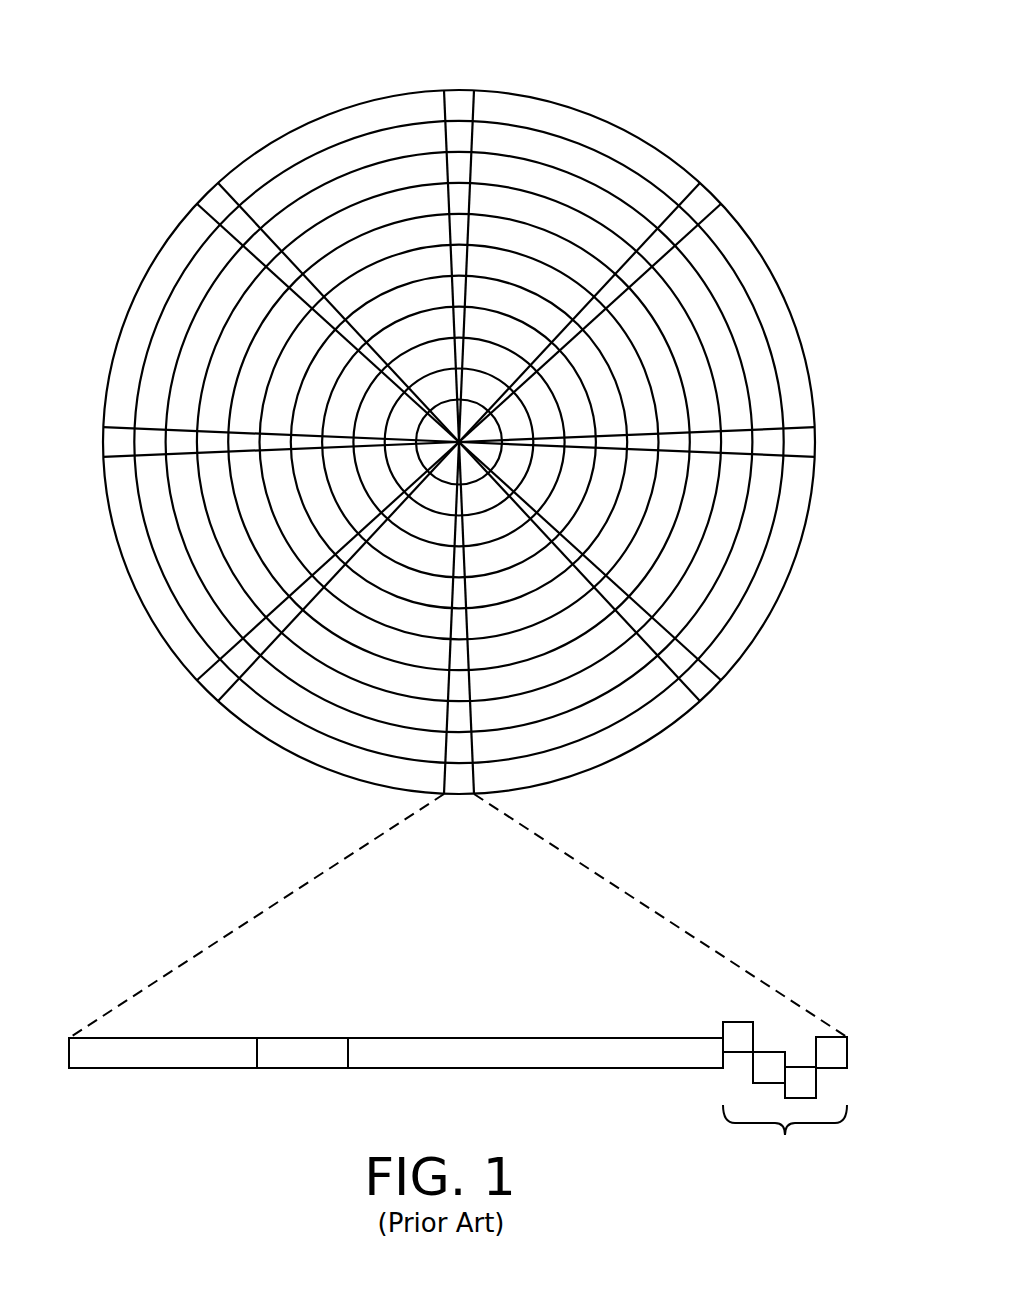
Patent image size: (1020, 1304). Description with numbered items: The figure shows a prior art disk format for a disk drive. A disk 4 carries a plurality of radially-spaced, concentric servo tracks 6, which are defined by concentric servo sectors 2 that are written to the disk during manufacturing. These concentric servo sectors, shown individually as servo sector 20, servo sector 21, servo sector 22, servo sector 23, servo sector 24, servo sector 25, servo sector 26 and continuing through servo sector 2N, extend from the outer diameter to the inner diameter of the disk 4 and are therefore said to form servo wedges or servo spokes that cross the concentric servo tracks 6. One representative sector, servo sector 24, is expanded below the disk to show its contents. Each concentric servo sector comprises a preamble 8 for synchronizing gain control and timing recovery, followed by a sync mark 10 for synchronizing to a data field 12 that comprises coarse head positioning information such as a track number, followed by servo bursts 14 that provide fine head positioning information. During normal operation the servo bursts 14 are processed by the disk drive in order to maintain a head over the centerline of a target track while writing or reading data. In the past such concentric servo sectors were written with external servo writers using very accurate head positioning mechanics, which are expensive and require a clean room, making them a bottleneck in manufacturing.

The disk 4 is at (197, 93).
The servo tracks 6 is at (580, 160).
The concentric servo sectors 2 is at (459, 454).
The servo sector 2_0 20 is at (460, 100).
The servo sector 2_1 21 is at (703, 200).
The servo sector 2_2 22 is at (808, 444).
The servo sector 2_3 23 is at (702, 683).
The servo sector 2_4 24 is at (300, 878).
The servo sector 2_5 25 is at (212, 683).
The servo sector 2_6 26 is at (108, 442).
The servo sector 2_N 2N is at (215, 202).
The preamble 8 is at (142, 1070).
The sync mark 10 is at (300, 1070).
The data field 12 is at (522, 1070).
The servo bursts 14 is at (707, 1002).